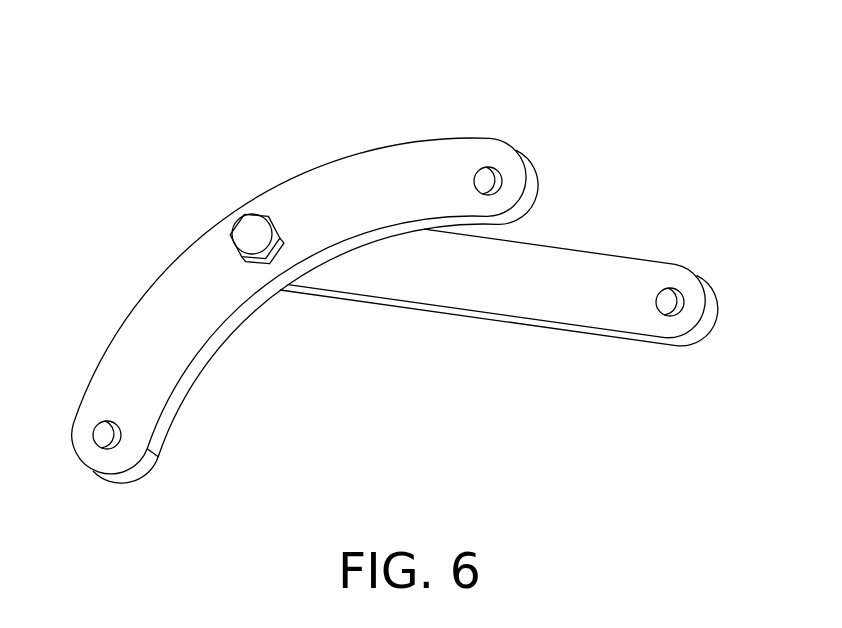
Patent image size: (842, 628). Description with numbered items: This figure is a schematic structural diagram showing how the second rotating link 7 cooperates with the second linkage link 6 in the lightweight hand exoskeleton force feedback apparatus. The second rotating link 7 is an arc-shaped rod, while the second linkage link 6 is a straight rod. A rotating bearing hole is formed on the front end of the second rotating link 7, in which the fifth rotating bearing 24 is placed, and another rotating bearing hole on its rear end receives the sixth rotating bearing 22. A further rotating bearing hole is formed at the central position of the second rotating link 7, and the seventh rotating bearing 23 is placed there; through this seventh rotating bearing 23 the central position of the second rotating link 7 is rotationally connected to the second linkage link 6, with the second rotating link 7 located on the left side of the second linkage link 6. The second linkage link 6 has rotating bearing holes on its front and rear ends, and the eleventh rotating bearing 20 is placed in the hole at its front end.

The second rotating link 7 is at (342, 187).
The second linkage link 6 is at (503, 288).
The sixth rotating bearing 22 is at (105, 433).
The fifth rotating bearing 24 is at (487, 180).
The eleventh rotating bearing 20 is at (672, 300).
The seventh rotating bearing 23 is at (237, 250).